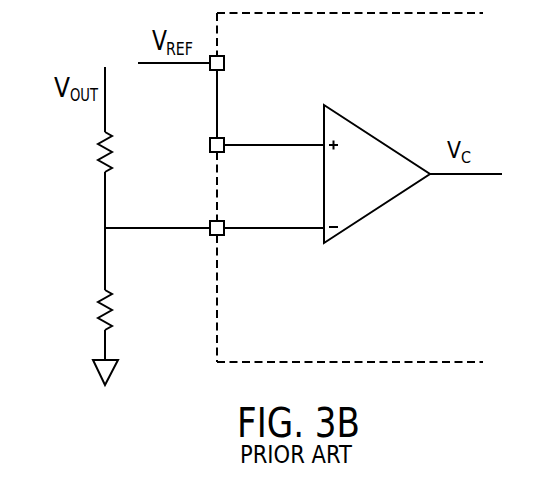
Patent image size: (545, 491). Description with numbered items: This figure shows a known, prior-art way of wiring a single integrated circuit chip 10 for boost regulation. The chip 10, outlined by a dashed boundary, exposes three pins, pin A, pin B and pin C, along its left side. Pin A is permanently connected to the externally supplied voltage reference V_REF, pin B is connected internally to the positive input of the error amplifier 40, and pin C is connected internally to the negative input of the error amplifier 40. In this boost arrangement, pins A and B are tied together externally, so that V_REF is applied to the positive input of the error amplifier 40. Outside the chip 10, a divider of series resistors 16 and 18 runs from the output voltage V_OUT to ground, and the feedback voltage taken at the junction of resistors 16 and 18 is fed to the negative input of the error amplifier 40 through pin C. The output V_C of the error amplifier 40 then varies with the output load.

The chip 10 is at (330, 66).
The resistor 16 is at (97, 157).
The resistor 18 is at (97, 316).
The error amplifier 40 is at (388, 146).
The pin A is at (224, 61).
The pin B is at (224, 142).
The pin C is at (224, 224).